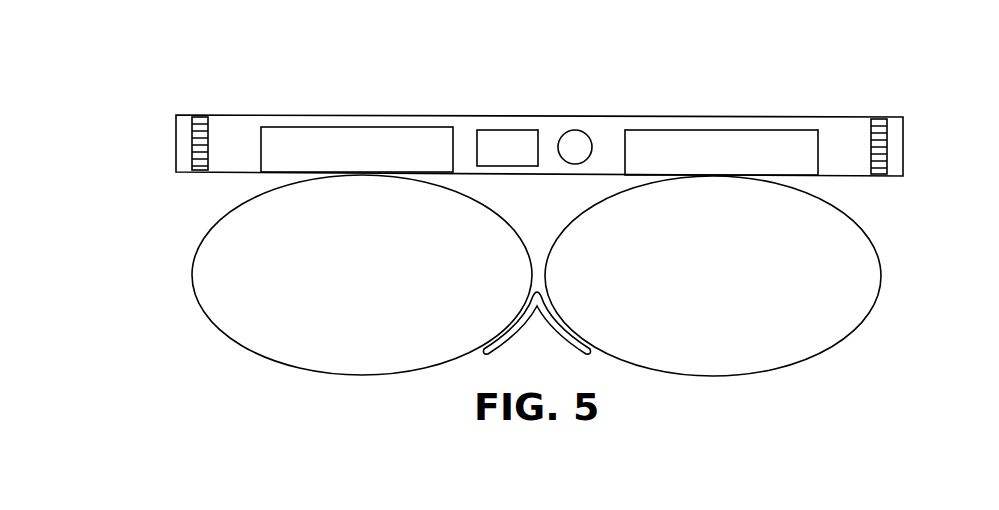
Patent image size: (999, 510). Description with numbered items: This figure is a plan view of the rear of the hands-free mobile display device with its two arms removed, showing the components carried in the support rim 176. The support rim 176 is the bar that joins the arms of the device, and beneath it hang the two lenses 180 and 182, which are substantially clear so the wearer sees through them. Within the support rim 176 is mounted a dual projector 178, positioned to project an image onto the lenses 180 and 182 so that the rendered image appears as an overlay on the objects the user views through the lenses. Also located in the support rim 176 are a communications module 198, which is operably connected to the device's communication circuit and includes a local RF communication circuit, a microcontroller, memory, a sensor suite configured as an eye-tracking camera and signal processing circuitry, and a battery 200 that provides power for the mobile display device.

The support rim 176 is at (903, 117).
The dual projector 178 is at (332, 127).
The lens 180 is at (235, 342).
The lens 182 is at (825, 355).
The communications module 198 is at (505, 130).
The battery 200 is at (582, 132).